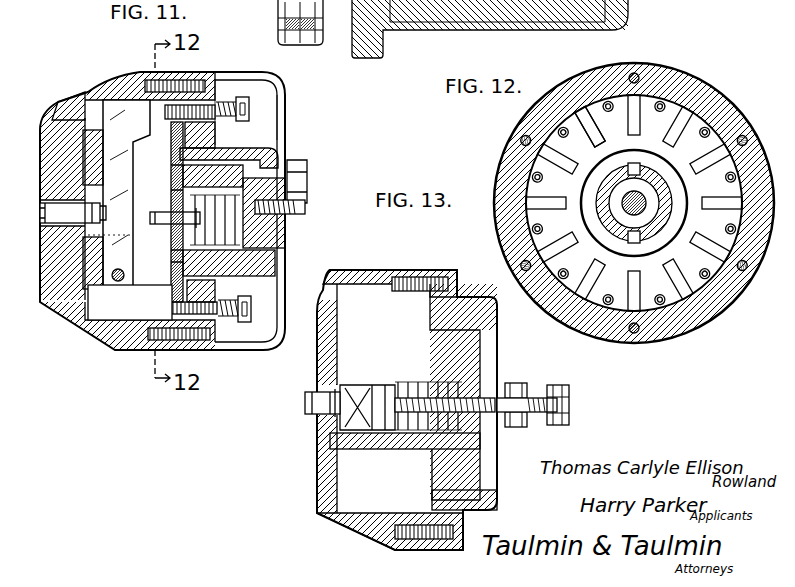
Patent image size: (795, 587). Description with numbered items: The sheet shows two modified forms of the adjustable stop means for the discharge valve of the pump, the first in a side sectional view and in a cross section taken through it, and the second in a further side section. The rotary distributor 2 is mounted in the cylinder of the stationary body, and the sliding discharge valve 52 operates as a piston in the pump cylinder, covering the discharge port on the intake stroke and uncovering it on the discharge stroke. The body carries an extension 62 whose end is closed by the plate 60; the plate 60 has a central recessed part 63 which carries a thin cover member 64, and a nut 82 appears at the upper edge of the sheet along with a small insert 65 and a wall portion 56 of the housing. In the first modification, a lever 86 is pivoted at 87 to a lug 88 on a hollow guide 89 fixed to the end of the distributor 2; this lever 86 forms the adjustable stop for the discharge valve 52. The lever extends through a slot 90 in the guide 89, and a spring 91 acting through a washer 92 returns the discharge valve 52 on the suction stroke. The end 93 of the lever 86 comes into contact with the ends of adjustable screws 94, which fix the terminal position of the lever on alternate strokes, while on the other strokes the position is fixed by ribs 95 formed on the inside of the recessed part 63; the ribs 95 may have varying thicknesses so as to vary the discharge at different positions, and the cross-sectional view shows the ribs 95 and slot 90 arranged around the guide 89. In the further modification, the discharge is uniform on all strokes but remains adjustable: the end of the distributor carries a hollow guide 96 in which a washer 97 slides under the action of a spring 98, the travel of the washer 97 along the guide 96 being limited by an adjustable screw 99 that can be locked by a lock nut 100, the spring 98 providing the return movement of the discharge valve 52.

In FIG. 11, the rotary distributor 2 is at (52, 182).
In FIG. 13, the rotary distributor 2 is at (322, 488).
In FIG. 11, the discharge valve 52 is at (47, 210).
In FIG. 13, the discharge valve 52 is at (318, 406).
In FIG. 11, the housing wall 56 is at (55, 158).
In FIG. 13, the housing wall 56 is at (326, 440).
In FIG. 11, the plate 60 is at (215, 135).
In FIG. 13, the plate 60 is at (498, 492).
In FIG. 11, the extension 62 is at (103, 332).
In FIG. 12, the extension 62 is at (556, 310).
In FIG. 13, the extension 62 is at (368, 285).
In FIG. 11, the recessed part 63 is at (276, 152).
In FIG. 11, the cover member 64 is at (270, 80).
In FIG. 11, the insert 65 is at (68, 104).
In FIG. 11, the nut 82 is at (280, 22).
In FIG. 11, the lever 86 is at (125, 215).
In FIG. 11, the pivot 87 is at (117, 283).
In FIG. 11, the lug 88 is at (103, 275).
In FIG. 11, the hollow guide 89 is at (242, 254).
In FIG. 12, the hollow guide 89 is at (665, 207).
In FIG. 11, the slot 90 is at (150, 185).
In FIG. 12, the slot 90 is at (676, 95).
In FIG. 11, the spring 91 is at (288, 175).
In FIG. 12, the spring 91 is at (620, 206).
In FIG. 11, the washer 92 is at (158, 225).
In FIG. 11, the lever end 93 is at (165, 110).
In FIG. 11, the adjustable screws 94 is at (238, 97).
In FIG. 12, the adjustable screws 94 is at (532, 178).
In FIG. 11, the ribs 95 is at (172, 132).
In FIG. 12, the ribs 95 is at (595, 125).
In FIG. 13, the hollow guide 96 is at (374, 450).
In FIG. 13, the washer 97 is at (362, 392).
In FIG. 13, the spring 98 is at (409, 432).
In FIG. 13, the adjustable screw 99 is at (482, 395).
In FIG. 13, the lock nut 100 is at (530, 428).